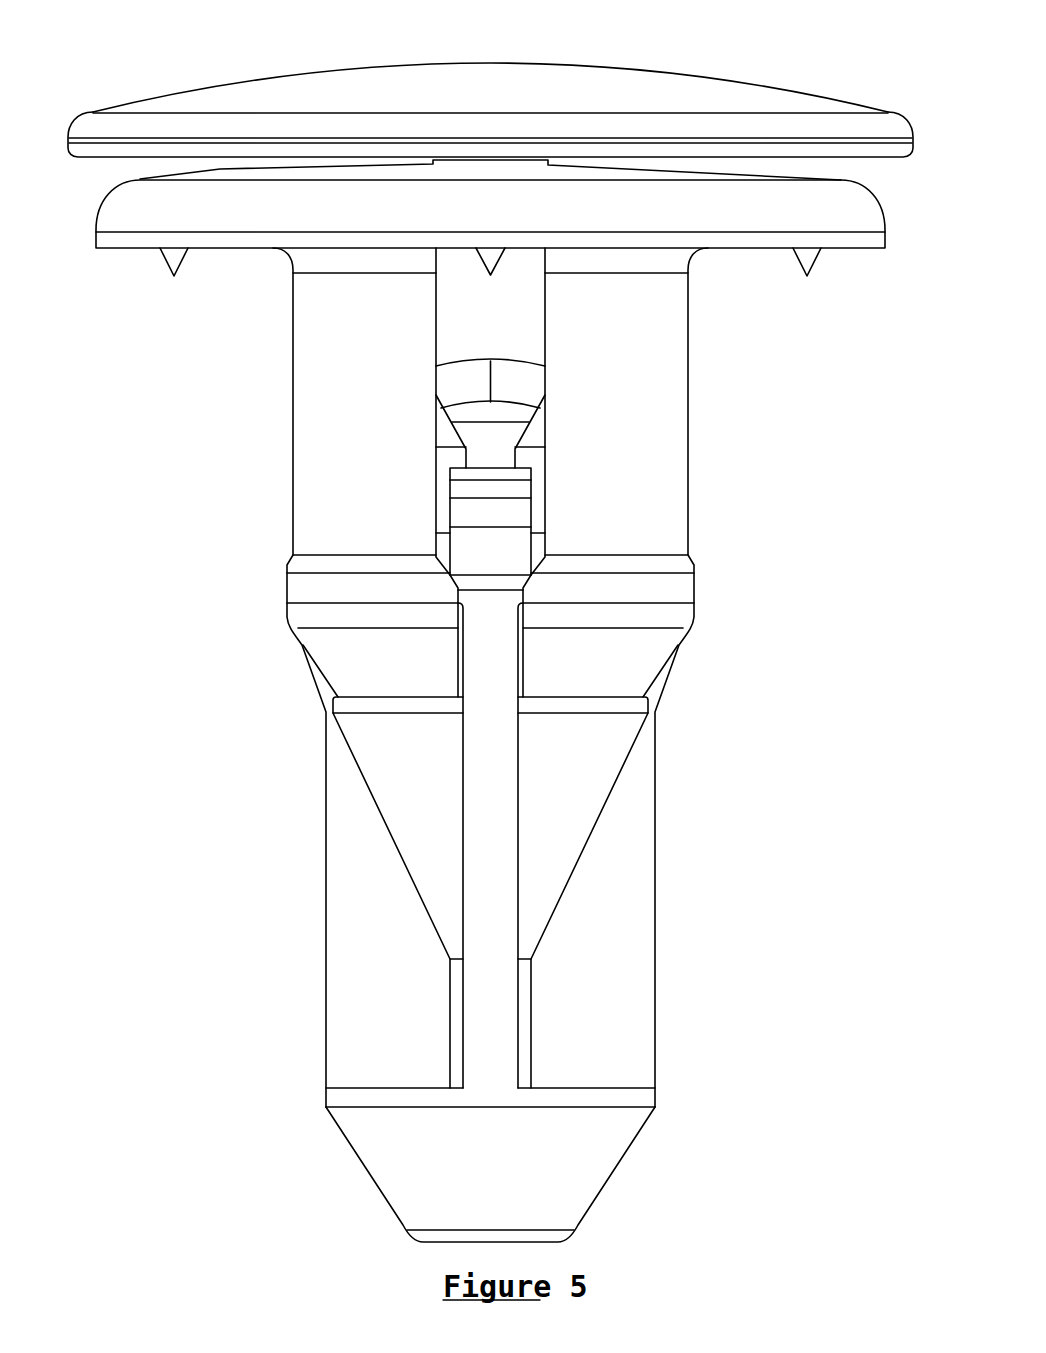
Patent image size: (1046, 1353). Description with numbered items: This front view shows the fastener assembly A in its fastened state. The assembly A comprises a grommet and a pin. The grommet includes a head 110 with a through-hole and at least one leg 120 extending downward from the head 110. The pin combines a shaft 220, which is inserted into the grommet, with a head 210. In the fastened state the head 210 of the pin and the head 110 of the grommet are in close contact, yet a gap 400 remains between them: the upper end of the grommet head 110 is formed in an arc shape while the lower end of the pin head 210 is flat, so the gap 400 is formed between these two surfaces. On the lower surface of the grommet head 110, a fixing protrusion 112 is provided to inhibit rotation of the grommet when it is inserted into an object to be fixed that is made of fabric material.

The head of the pin 210 is at (497, 61).
The gap 400 is at (847, 165).
The head of the grommet 110 is at (135, 208).
The fixing protrusion 112 is at (813, 267).
The leg 120 is at (680, 513).
The shaft 220 is at (600, 1180).
The fastener assembly A is at (242, 637).